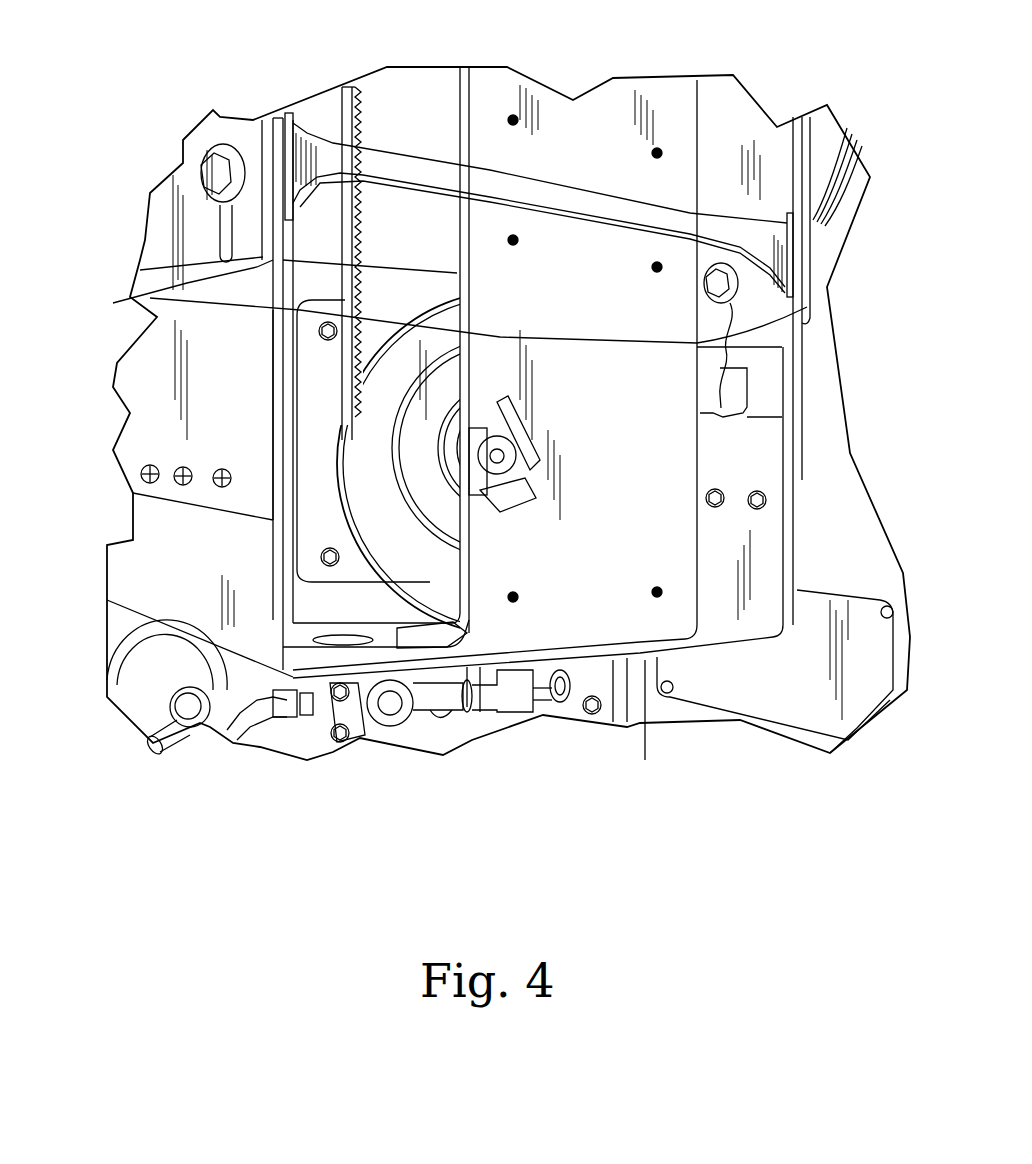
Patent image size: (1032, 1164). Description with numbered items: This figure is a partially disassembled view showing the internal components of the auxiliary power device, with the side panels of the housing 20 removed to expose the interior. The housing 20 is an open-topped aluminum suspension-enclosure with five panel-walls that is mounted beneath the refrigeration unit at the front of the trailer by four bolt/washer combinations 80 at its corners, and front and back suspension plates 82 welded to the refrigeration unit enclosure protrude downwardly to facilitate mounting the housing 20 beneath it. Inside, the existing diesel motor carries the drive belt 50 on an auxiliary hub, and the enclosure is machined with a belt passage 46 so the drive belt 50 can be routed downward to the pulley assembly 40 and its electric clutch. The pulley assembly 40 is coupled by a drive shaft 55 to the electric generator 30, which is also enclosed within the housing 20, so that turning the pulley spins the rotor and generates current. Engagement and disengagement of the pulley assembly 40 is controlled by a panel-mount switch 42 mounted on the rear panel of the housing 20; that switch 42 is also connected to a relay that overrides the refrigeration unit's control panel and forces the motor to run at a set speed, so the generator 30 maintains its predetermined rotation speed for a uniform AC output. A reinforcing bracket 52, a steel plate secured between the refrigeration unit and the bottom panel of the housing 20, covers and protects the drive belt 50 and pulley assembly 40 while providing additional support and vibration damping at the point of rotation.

The housing 20 is at (267, 633).
The electric generator 30 is at (390, 268).
The pulley assembly 40 is at (393, 523).
The panel-mount switch 42 is at (747, 413).
The belt passage 46 is at (623, 210).
The drive belt 50 is at (347, 363).
The reinforcing bracket 52 is at (607, 573).
The drive shaft 55 is at (497, 425).
The bolt/washer combinations 80 is at (710, 283).
The suspension plates 82 is at (143, 262).